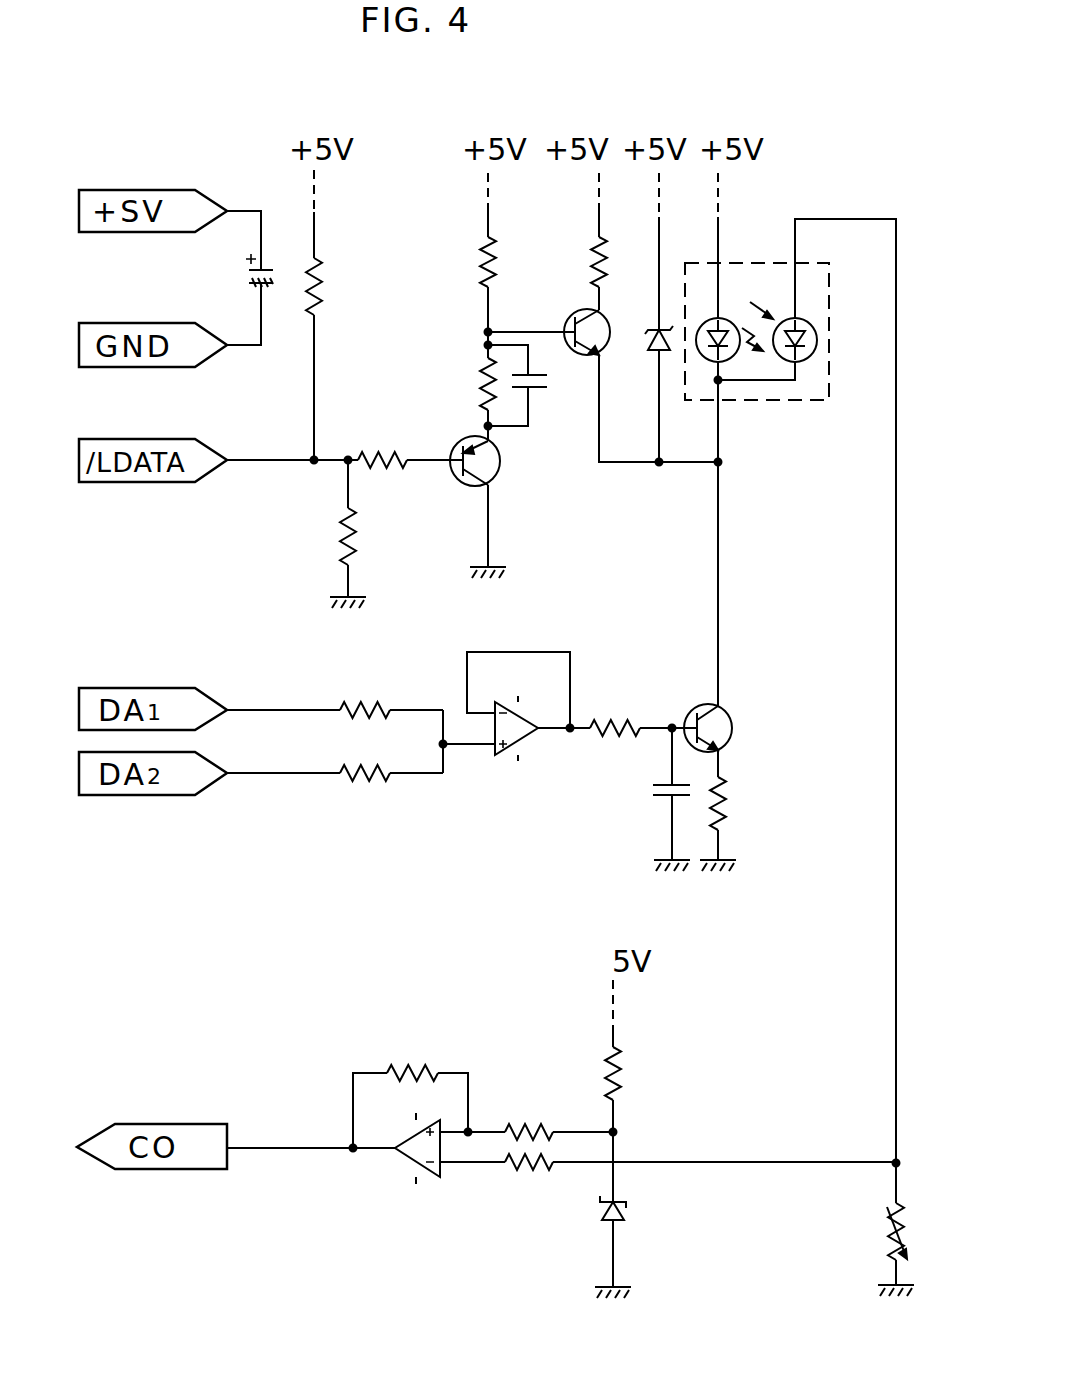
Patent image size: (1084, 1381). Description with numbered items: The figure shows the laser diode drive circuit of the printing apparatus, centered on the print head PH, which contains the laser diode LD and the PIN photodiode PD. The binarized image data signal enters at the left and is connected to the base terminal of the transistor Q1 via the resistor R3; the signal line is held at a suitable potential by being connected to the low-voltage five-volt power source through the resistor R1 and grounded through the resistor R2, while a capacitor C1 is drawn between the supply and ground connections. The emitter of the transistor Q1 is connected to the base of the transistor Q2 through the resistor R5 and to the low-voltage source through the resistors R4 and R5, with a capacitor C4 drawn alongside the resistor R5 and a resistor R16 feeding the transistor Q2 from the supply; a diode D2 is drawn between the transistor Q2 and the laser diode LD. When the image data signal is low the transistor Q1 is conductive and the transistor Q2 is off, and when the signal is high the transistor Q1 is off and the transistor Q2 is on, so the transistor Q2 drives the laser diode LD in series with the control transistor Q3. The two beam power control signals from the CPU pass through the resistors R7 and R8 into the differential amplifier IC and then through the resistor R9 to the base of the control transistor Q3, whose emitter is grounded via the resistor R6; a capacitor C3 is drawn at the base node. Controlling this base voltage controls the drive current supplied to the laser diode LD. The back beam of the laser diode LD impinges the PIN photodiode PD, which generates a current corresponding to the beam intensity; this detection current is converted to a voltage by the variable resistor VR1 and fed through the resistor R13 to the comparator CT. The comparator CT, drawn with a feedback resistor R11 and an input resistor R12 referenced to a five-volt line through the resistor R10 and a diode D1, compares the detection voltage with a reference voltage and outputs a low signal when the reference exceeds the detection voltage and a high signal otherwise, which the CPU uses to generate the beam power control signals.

The electrolytic capacitor C1 is at (236, 278).
The resistor R1 is at (339, 315).
The resistor R2 is at (366, 534).
The resistor R3 is at (410, 445).
The resistor R4 is at (461, 265).
The resistor R5 is at (461, 394).
The capacitor C4 is at (531, 386).
The resistor R16 is at (566, 241).
The transistor Q1 is at (500, 502).
The transistor Q2 is at (603, 370).
The zener diode D2 is at (642, 317).
The print head PH is at (782, 660).
The laser diode LD is at (704, 439).
The PIN photodiode PD is at (807, 691).
The resistor R7 is at (335, 694).
The resistor R8 is at (335, 797).
The differential amplifier IC is at (528, 732).
The resistor R9 is at (643, 710).
The capacitor C3 is at (645, 799).
The control transistor Q3 is at (732, 740).
The resistor R6 is at (737, 824).
The resistor R10 is at (648, 1091).
The zener diode D1 is at (637, 1247).
The comparator CT is at (366, 1166).
The resistor R11 is at (412, 1086).
The resistor R12 is at (555, 1113).
The resistor R13 is at (700, 1184).
The variable resistor VR1 is at (864, 1228).